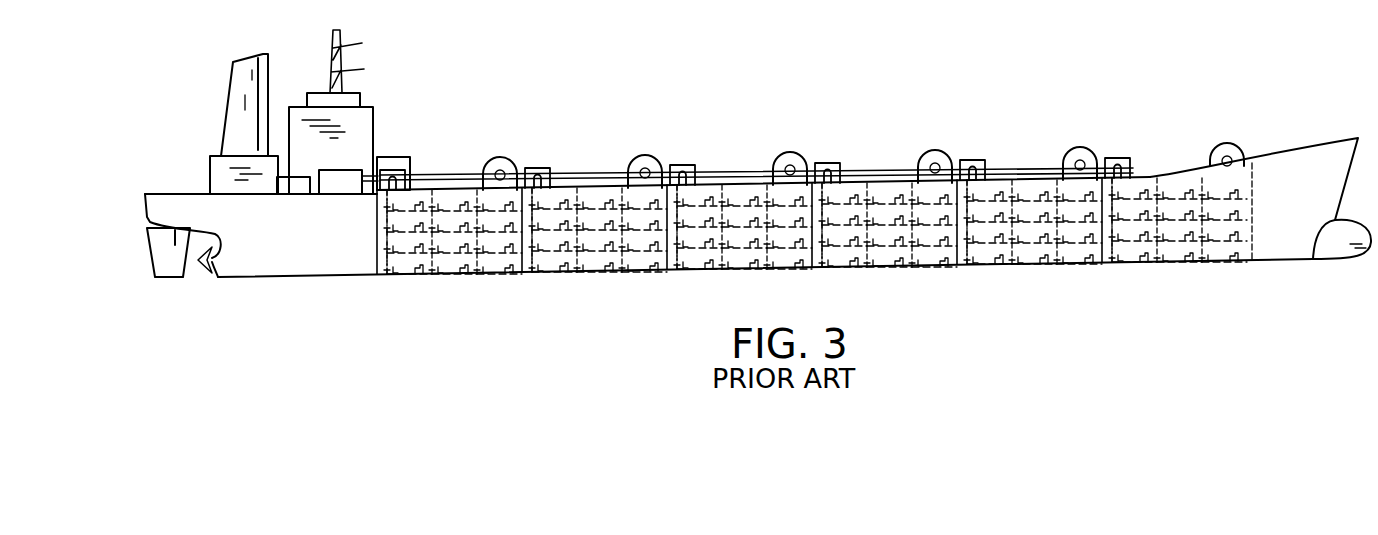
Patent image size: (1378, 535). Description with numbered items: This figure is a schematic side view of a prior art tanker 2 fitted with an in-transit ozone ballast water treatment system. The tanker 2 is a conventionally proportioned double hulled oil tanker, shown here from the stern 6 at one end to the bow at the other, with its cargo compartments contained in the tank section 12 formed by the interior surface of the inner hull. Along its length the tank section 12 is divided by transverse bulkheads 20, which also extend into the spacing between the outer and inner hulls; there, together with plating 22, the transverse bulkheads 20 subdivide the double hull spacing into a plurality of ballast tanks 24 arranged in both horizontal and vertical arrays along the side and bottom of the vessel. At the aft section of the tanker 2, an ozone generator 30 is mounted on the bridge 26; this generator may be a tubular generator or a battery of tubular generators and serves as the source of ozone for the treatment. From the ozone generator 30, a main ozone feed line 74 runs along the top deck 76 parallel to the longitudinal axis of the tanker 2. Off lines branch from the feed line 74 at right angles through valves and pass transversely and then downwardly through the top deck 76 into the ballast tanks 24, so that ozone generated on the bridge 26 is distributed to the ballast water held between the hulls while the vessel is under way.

The tanker 2 is at (756, 177).
The stern 6 is at (146, 193).
The tank section 12 is at (730, 180).
The transverse bulkheads 20 is at (1112, 233).
The plating 22 is at (428, 250).
The ballast tanks 24 is at (1042, 253).
The bridge 26 is at (200, 193).
The ozone generator 30 is at (343, 172).
The main ozone feed line 74 is at (573, 172).
The top deck 76 is at (882, 170).